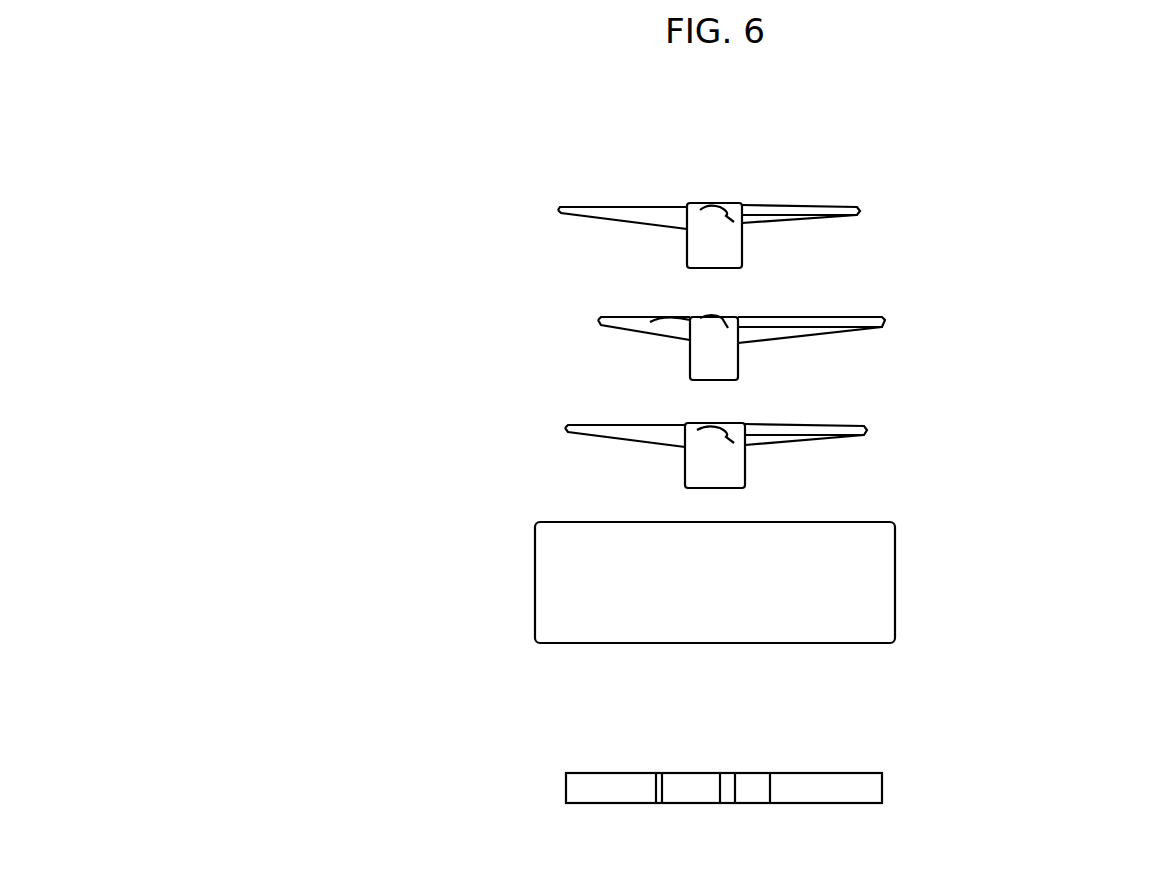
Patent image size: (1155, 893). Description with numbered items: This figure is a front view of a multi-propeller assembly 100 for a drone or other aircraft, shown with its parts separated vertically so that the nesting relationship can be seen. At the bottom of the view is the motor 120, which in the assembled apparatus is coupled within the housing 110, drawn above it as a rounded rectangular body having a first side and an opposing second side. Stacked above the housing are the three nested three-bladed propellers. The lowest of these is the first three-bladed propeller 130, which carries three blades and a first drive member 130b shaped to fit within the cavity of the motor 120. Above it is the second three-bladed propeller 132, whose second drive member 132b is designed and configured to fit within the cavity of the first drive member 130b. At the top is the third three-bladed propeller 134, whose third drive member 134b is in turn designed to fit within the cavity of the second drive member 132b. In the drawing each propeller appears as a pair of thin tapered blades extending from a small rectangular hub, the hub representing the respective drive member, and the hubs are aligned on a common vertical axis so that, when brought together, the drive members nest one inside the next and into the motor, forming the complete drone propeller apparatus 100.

The multi-propeller assembly 100 is at (178, 153).
The housing 110 is at (550, 559).
The motor 120 is at (583, 783).
The first three-bladed propeller 130 is at (565, 428).
The first drive member 130b is at (746, 470).
The second three-bladed propeller 132 is at (884, 318).
The second drive member 132b is at (740, 367).
The third three-bladed propeller 134 is at (858, 210).
The third drive member 134b is at (744, 258).